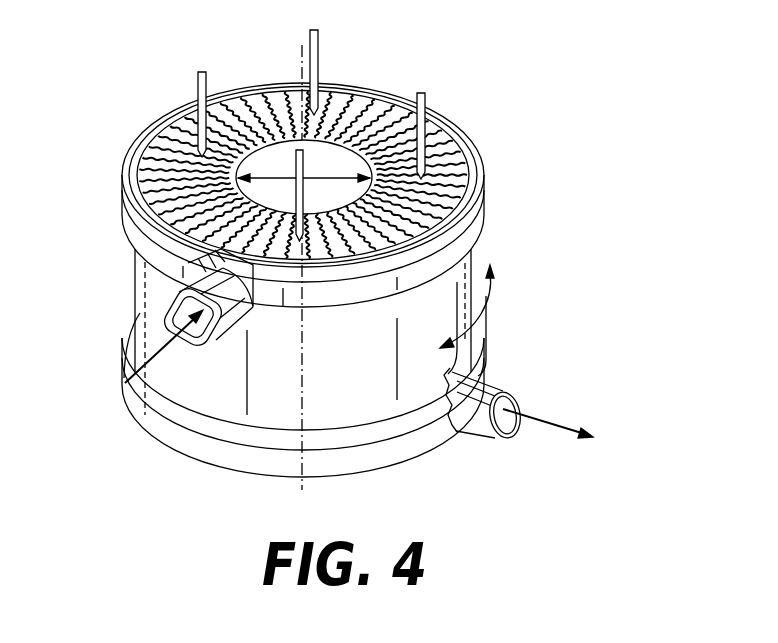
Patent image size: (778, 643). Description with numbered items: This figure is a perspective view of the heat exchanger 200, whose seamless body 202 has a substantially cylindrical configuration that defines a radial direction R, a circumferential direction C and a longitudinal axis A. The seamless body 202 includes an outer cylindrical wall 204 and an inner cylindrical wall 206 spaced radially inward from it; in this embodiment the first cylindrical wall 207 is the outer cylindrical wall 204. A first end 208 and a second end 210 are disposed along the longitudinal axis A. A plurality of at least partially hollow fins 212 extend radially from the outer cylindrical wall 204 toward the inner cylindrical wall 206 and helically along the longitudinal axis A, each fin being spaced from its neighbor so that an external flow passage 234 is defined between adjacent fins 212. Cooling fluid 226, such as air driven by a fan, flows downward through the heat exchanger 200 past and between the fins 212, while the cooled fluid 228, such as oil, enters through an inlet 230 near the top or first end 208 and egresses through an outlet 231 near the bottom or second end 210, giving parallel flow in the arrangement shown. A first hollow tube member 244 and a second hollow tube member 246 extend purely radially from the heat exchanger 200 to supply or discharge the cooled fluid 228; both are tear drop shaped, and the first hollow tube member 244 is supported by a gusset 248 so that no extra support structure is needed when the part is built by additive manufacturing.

The heat exchanger 200 is at (353, 267).
The seamless body 202 is at (466, 100).
The outer cylindrical wall 204 is at (297, 332).
The inner cylindrical wall 206 is at (312, 148).
The first cylindrical wall 207 is at (343, 153).
The first end 208 is at (470, 212).
The second end 210 is at (383, 470).
The fins 212 is at (473, 177).
The cooling fluid 226 is at (311, 52).
The cooled fluid 228 is at (128, 388).
The inlet 230 is at (140, 318).
The outlet 231 is at (505, 440).
The external flow passage 234 is at (473, 240).
The first hollow tube member 244 is at (243, 327).
The second hollow tube member 246 is at (503, 372).
The gusset 248 is at (212, 340).
The radial direction R is at (264, 170).
The longitudinal axis A is at (311, 147).
The circumferential direction C is at (488, 300).